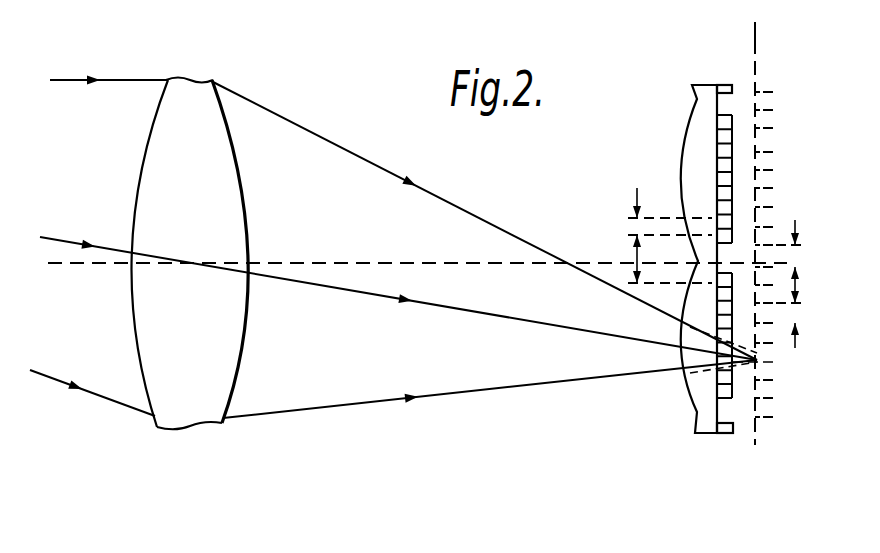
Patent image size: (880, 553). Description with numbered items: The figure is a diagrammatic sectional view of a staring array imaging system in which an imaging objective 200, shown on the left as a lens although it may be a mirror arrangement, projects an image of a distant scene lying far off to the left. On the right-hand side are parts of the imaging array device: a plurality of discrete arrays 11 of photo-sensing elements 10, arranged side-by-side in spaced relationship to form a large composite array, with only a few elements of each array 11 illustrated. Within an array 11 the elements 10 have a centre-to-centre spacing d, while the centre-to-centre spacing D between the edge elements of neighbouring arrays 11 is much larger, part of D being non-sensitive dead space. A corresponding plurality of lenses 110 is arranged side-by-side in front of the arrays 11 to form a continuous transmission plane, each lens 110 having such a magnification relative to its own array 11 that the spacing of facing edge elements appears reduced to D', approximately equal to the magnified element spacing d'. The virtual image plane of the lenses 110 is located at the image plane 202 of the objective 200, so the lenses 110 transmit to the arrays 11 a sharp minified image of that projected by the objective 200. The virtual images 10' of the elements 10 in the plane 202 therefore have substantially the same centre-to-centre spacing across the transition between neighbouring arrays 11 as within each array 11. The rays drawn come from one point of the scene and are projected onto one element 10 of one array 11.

The imaging objective 200 is at (218, 358).
The lens 110 is at (698, 120).
The discrete array 11 is at (676, 117).
The image plane 202 is at (755, 33).
The photo-sensing element 10 is at (765, 133).
The virtual image of element 10' is at (796, 286).
The centre-to-centre spacing of elements d is at (613, 205).
The centre-to-centre spacing of edge elements D is at (613, 251).
The reduced centre-to-centre spacing of edge elements D' is at (810, 236).
The magnified centre-to-centre spacing of elements d' is at (810, 307).